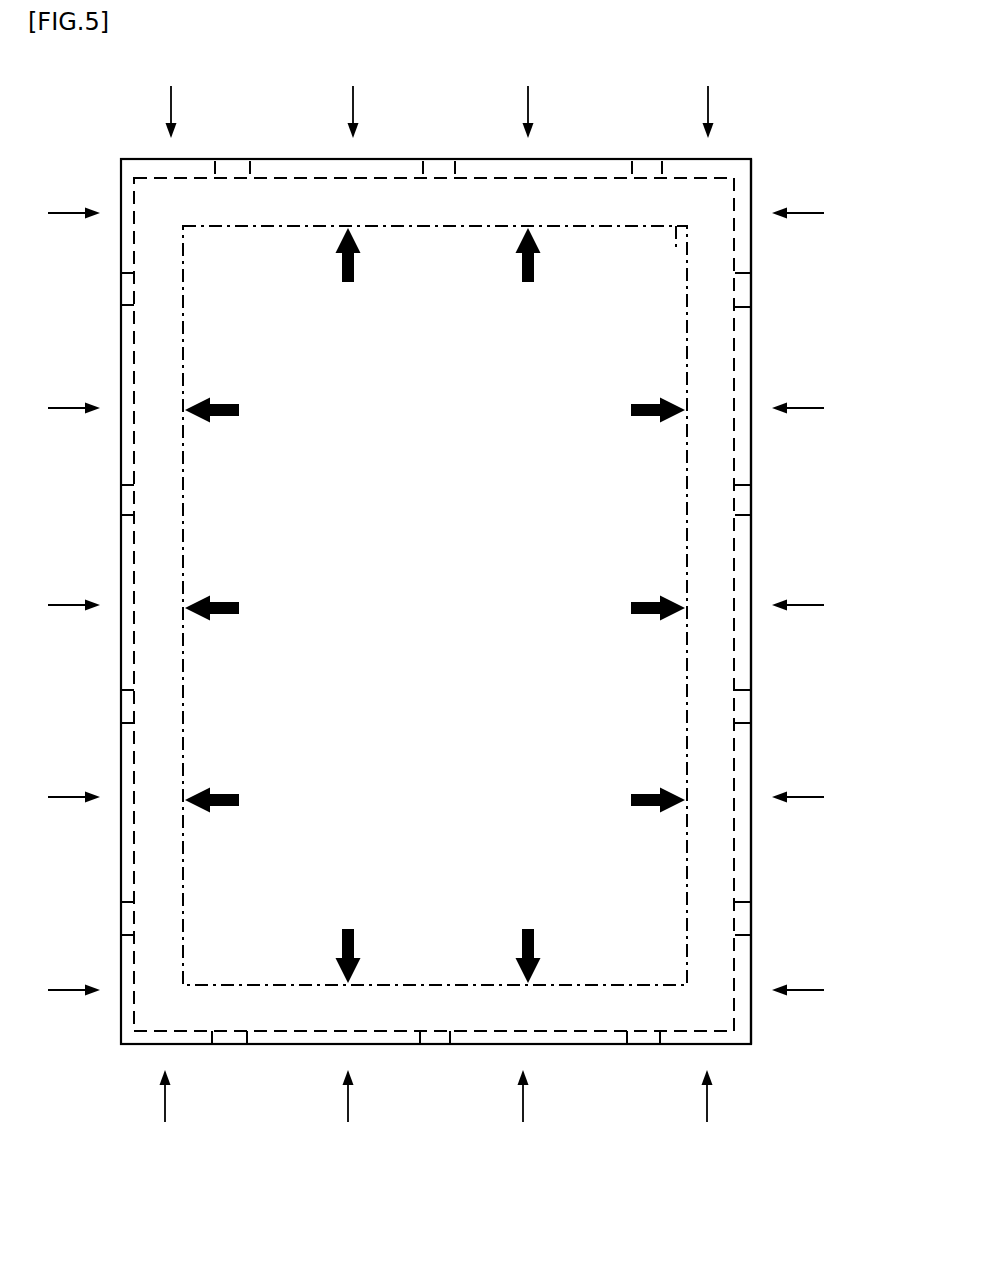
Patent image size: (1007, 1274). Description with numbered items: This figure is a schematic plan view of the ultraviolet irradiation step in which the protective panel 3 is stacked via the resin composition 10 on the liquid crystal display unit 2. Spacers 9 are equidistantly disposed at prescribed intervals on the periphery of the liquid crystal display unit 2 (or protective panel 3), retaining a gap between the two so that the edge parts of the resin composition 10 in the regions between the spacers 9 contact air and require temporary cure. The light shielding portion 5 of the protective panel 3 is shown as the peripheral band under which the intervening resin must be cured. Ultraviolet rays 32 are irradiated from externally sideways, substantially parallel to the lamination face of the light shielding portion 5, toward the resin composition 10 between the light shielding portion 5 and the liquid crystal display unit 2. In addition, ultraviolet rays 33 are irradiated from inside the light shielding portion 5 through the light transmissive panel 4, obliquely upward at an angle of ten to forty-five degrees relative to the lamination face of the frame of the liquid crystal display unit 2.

The liquid crystal display unit 2 is at (436, 564).
The protective panel 3 is at (570, 157).
The light transmissive panel 4 is at (809, 601).
The light shielding portion 5 is at (296, 205).
The spacer 9 is at (437, 178).
The resin composition 10 is at (680, 218).
The ultraviolet rays 32 is at (355, 104).
The ultraviolet rays 33 is at (352, 262).